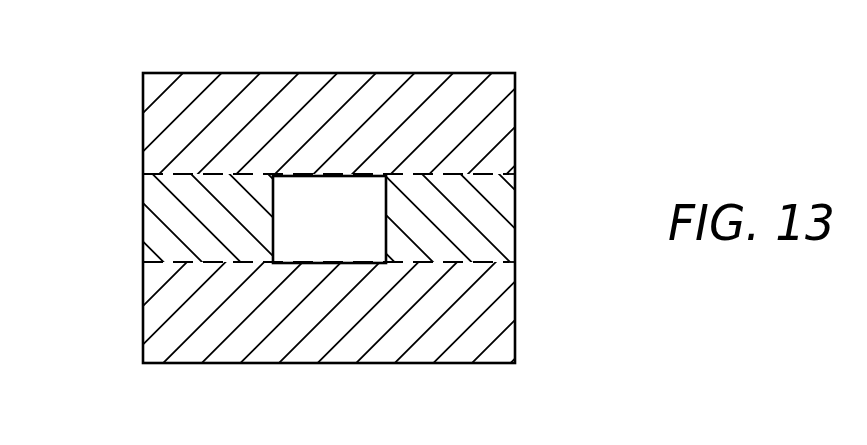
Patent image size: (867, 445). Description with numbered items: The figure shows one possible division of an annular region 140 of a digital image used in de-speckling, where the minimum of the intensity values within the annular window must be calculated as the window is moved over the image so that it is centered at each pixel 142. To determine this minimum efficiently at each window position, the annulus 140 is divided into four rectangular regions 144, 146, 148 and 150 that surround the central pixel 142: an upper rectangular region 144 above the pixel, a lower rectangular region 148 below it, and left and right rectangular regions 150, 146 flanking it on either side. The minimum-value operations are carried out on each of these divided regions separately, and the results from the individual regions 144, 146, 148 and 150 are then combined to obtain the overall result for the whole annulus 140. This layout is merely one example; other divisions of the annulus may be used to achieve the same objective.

The annular region 140 is at (108, 105).
The pixel 142 is at (351, 228).
The rectangular region 144 is at (276, 77).
The rectangular region 146 is at (508, 206).
The rectangular region 148 is at (293, 357).
The rectangular region 150 is at (148, 230).